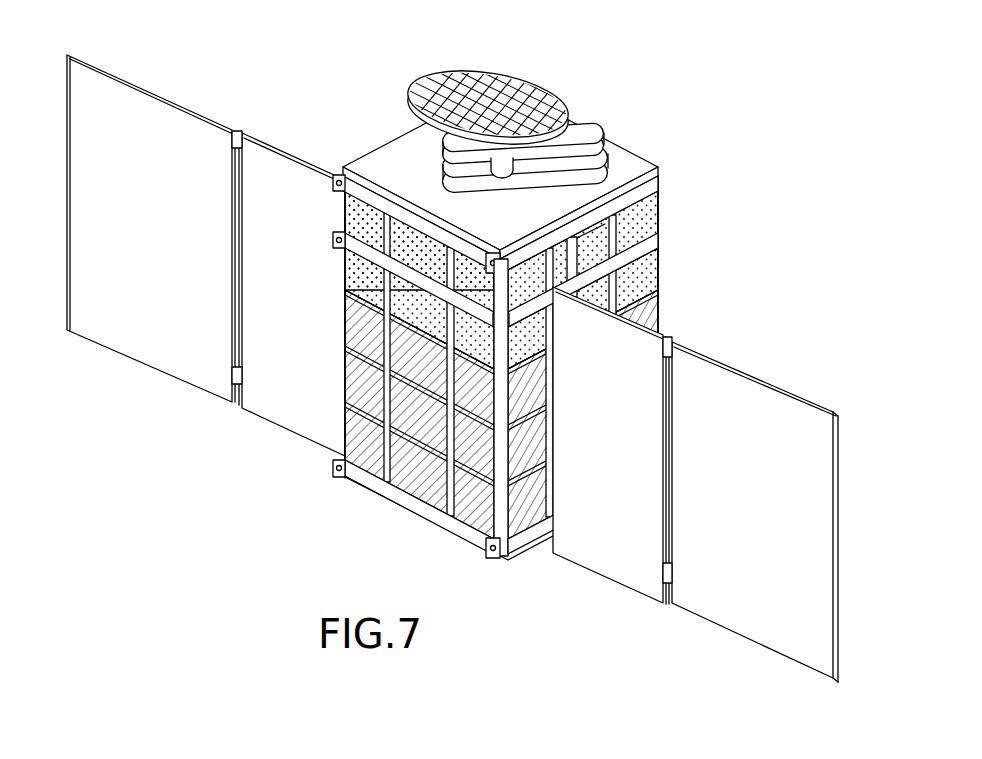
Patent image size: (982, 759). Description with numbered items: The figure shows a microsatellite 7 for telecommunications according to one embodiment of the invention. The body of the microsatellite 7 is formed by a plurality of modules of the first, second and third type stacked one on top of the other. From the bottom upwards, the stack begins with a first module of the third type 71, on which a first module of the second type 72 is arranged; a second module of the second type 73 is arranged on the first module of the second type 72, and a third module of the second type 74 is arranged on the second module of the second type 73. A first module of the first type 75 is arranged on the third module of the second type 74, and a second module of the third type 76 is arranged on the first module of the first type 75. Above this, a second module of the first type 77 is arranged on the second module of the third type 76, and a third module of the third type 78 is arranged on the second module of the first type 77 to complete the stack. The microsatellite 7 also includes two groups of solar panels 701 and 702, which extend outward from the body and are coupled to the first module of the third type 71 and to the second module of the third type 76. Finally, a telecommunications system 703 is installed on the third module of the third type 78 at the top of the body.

The microsatellite 7 is at (722, 110).
The group of solar panels 701 is at (756, 365).
The group of solar panels 702 is at (228, 105).
The telecommunications system 703 is at (568, 75).
The first module of the third type 71 is at (402, 497).
The first module of the second type 72 is at (348, 436).
The second module of the second type 73 is at (347, 386).
The third module of the second type 74 is at (648, 310).
The first module of the first type 75 is at (642, 245).
The second module of the third type 76 is at (645, 276).
The second module of the first type 77 is at (648, 208).
The third module of the third type 78 is at (362, 188).